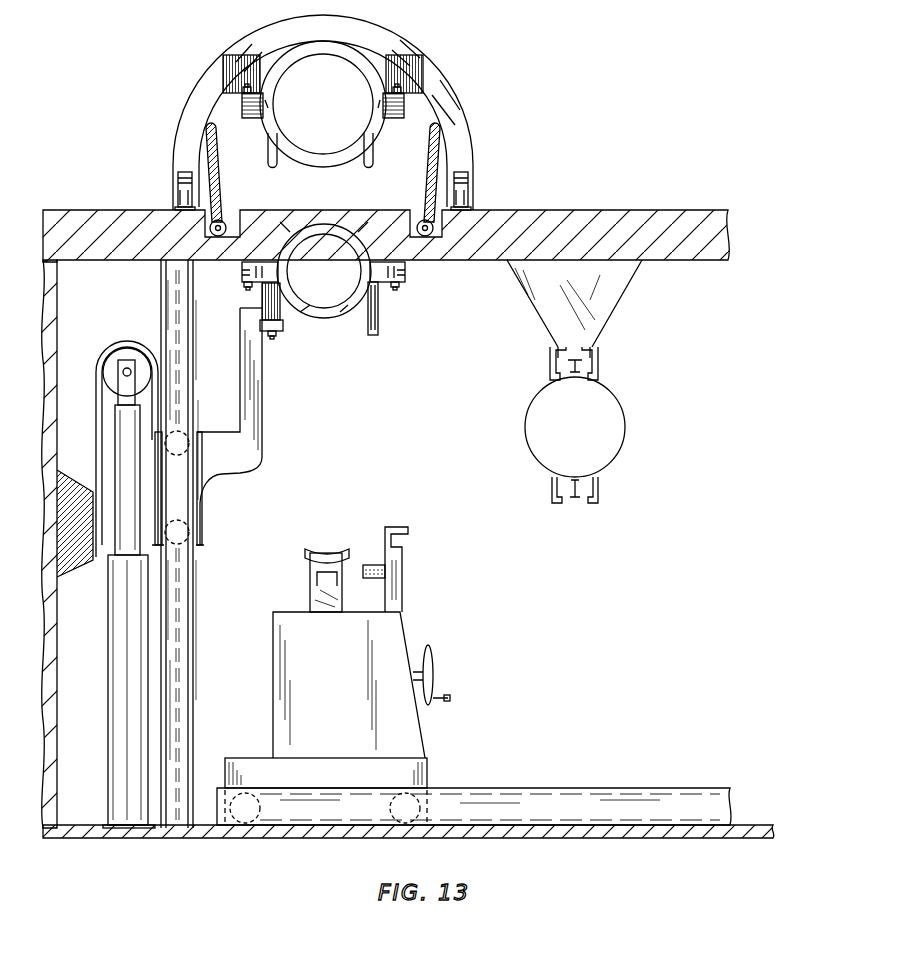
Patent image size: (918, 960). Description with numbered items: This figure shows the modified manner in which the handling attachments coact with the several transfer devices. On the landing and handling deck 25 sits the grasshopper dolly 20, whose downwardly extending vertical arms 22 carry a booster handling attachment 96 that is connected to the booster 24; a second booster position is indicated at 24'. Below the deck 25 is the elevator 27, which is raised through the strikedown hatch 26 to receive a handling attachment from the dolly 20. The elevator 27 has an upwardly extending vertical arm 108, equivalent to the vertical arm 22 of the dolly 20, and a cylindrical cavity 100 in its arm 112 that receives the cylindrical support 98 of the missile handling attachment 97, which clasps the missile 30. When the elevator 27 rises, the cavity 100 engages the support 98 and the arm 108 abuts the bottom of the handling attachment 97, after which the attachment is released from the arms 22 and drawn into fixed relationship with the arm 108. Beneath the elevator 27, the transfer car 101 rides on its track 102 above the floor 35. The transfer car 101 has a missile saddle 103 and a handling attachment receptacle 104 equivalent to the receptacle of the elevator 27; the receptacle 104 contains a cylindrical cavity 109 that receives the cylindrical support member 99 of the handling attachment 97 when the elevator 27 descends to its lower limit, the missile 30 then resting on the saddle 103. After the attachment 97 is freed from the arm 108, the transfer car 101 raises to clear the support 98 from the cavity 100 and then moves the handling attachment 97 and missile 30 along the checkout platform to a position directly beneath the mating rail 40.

The grasshopper dolly 20 is at (443, 100).
The downwardly extending vertical arms 22 is at (242, 72).
The booster 24 is at (323, 104).
The ball (lower position) 24' is at (575, 440).
The landing and handling deck 25 is at (118, 210).
The strikedown hatch 26 is at (212, 161).
The elevator 27 is at (253, 392).
The missile 30 is at (314, 263).
The floor 35 is at (752, 825).
The mating rail 40 is at (580, 352).
The booster handling attachment 96 is at (320, 162).
The missile handling attachment 97 is at (333, 312).
The cylindrical handling attachment support 98 is at (273, 340).
The cylindrical support member 99 is at (378, 330).
The cylindrical cavity 100 is at (283, 330).
The transfer car 101 is at (334, 667).
The track rail 102 is at (540, 800).
The missile saddle 103 is at (310, 563).
The handling attachment receptacle 104 is at (405, 537).
The upwardly extending vertical arm 108 is at (252, 305).
The cylindrical cavity 109 is at (375, 565).
The arm 112 is at (283, 318).